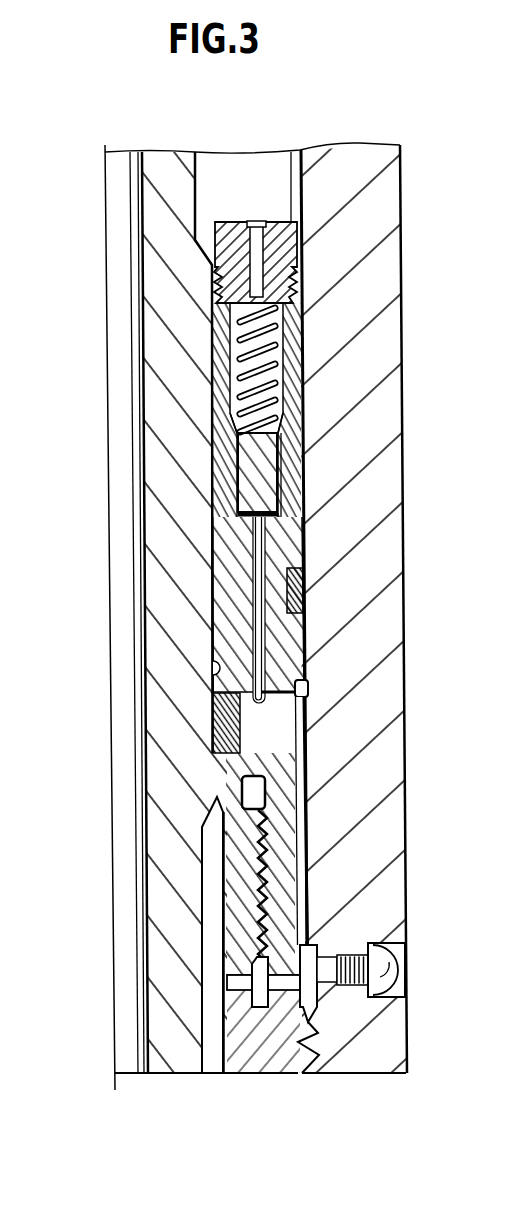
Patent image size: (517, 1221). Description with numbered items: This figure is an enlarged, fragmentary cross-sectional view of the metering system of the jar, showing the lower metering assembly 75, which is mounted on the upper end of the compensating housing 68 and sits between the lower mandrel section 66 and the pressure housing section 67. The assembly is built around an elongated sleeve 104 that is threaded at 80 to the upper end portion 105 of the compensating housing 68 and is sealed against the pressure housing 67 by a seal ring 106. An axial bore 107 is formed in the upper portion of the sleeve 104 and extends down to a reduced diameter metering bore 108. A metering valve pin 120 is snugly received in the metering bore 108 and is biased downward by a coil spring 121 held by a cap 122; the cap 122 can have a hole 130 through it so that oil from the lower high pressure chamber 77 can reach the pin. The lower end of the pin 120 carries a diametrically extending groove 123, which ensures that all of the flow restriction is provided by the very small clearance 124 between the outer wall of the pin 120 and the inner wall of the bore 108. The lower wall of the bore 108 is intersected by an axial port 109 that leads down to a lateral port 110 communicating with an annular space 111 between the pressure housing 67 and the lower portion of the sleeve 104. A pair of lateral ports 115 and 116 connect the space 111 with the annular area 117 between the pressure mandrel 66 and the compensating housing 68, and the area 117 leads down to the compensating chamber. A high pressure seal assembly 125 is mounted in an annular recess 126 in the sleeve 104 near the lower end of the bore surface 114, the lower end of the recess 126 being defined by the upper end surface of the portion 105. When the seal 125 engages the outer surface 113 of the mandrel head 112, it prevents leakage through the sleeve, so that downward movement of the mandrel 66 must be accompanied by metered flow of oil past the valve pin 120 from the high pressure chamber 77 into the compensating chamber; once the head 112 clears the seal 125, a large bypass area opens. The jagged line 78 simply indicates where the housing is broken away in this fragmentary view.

The lower high pressure chamber 77 is at (283, 182).
The cap 122 is at (287, 245).
The hole 130 is at (253, 240).
The mandrel head 112 is at (158, 285).
The coil spring 121 is at (237, 330).
The axial bore 107 is at (290, 355).
The clearance 124 is at (235, 445).
The metering bore 108 is at (280, 463).
The metering valve pin 120 is at (250, 477).
The lower metering assembly 75 is at (410, 511).
The groove 123 is at (217, 525).
The sleeve 104 is at (293, 533).
The axial port 109 is at (258, 578).
The seal ring 106 is at (307, 600).
The bore surface 114 is at (212, 647).
The lateral port 110 is at (300, 693).
The outer surface 113 is at (217, 667).
The high pressure seal assembly 125 is at (225, 724).
The annular space 111 is at (305, 757).
The annular recess 126 is at (240, 755).
The lower mandrel section 66 is at (162, 845).
The threaded connection 80 is at (272, 847).
The upper end portion 105 is at (237, 885).
The pressure housing section 67 is at (388, 890).
The annular area 117 is at (212, 932).
The lateral port 116 is at (230, 985).
The compensating housing 68 is at (237, 1042).
The break line 78 is at (317, 1047).
The lateral port 115 is at (278, 1015).